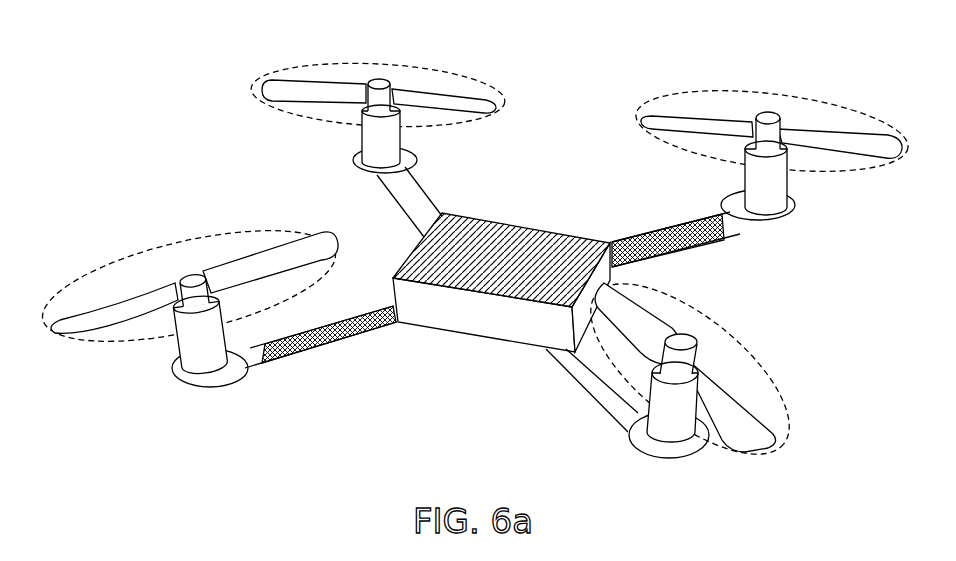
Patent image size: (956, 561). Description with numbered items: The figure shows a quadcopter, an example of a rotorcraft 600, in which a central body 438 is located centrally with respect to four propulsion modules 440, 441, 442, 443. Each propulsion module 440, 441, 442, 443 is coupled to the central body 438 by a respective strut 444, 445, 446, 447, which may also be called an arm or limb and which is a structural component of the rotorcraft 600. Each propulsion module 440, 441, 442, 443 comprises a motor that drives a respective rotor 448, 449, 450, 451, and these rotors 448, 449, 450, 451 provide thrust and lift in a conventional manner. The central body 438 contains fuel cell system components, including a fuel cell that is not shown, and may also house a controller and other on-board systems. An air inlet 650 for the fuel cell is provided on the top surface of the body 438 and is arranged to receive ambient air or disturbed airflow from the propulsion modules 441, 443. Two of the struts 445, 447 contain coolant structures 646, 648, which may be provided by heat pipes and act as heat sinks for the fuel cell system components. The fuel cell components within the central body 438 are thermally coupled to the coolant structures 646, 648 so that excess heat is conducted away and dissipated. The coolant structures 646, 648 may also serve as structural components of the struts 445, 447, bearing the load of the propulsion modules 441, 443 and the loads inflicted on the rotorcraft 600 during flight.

The rotorcraft 600 is at (205, 75).
The central body 438 is at (501, 279).
The air inlet 650 is at (533, 232).
The propulsion module 440 is at (673, 437).
The propulsion module 441 is at (190, 337).
The propulsion module 442 is at (372, 139).
The propulsion module 443 is at (775, 185).
The strut 444 is at (555, 360).
The strut 445 is at (315, 365).
The strut 446 is at (407, 212).
The strut 447 is at (707, 228).
The rotor 448 is at (717, 385).
The rotor 449 is at (230, 258).
The rotor 450 is at (340, 80).
The rotor 451 is at (705, 115).
The coolant structure 646 is at (328, 345).
The coolant structure 648 is at (648, 232).